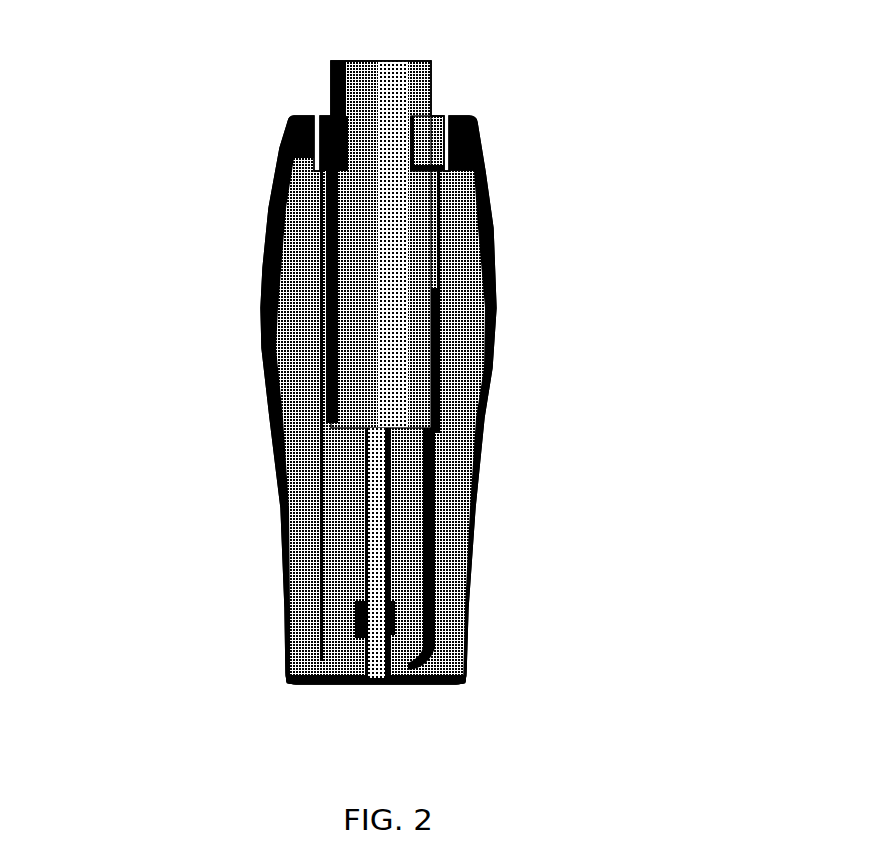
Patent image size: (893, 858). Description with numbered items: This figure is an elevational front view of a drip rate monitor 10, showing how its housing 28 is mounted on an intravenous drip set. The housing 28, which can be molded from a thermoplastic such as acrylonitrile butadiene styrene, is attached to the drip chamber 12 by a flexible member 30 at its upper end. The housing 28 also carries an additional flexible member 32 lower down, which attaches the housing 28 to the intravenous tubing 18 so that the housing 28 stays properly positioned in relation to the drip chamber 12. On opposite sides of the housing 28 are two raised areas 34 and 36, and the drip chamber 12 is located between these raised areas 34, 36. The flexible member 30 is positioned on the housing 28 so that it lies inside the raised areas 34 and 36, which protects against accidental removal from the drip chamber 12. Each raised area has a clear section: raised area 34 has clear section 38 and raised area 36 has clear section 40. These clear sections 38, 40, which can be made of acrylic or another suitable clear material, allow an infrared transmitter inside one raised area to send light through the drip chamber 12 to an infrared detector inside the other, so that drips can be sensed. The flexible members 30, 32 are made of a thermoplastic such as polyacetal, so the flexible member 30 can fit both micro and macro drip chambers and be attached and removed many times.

The drip rate monitor 10 is at (539, 499).
The drip chamber 12 is at (420, 63).
The intravenous tubing 18 is at (410, 580).
The housing 28 is at (455, 678).
The flexible member 30 is at (433, 115).
The flexible member 32 is at (418, 632).
The raised area 34 is at (257, 257).
The raised area 36 is at (460, 233).
The clear section 38 is at (317, 212).
The clear section 40 is at (432, 215).